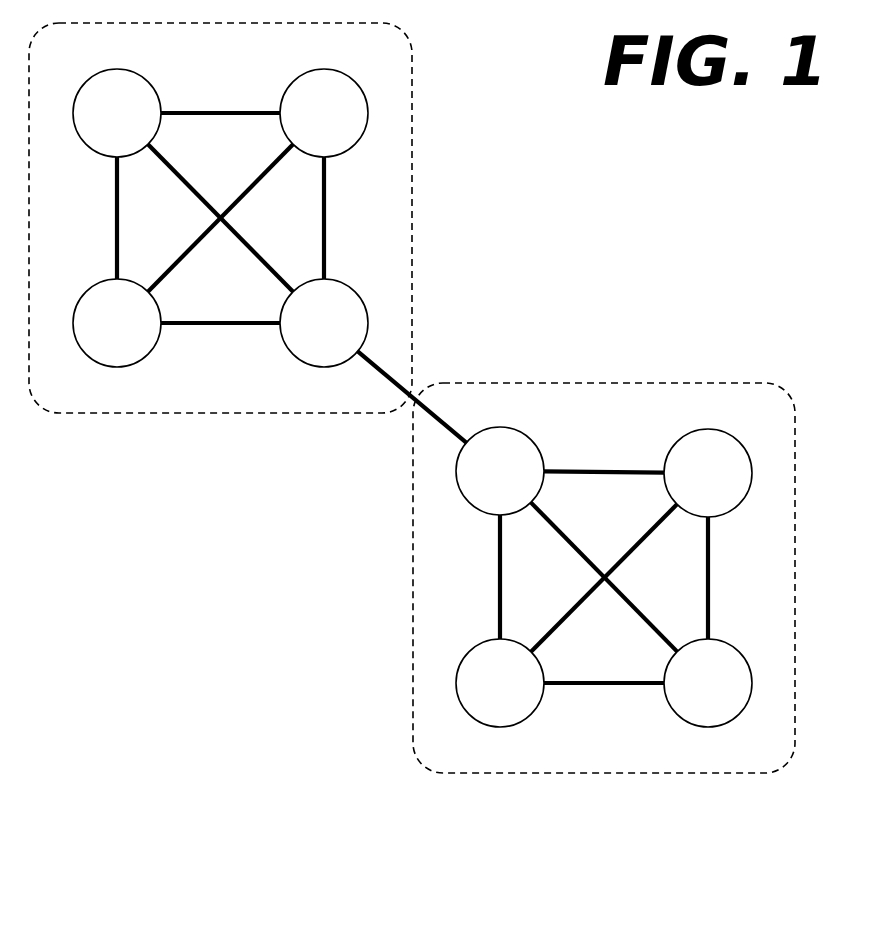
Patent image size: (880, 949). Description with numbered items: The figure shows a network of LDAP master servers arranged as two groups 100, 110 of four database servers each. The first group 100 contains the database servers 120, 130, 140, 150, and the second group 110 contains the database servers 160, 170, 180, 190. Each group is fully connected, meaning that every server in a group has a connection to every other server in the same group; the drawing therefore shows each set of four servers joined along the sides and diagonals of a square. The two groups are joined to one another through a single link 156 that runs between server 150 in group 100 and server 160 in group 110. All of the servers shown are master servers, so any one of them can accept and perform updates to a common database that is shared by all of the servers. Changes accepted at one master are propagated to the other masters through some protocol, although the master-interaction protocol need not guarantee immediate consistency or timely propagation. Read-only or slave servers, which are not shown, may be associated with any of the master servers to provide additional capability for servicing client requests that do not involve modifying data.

The group 100 is at (118, 413).
The group 110 is at (498, 773).
The database server 120 is at (117, 113).
The database server 130 is at (324, 113).
The database server 140 is at (117, 323).
The database server 150 is at (324, 323).
The link 156 is at (413, 397).
The database server 160 is at (500, 471).
The database server 170 is at (708, 473).
The database server 180 is at (500, 683).
The database server 190 is at (708, 683).